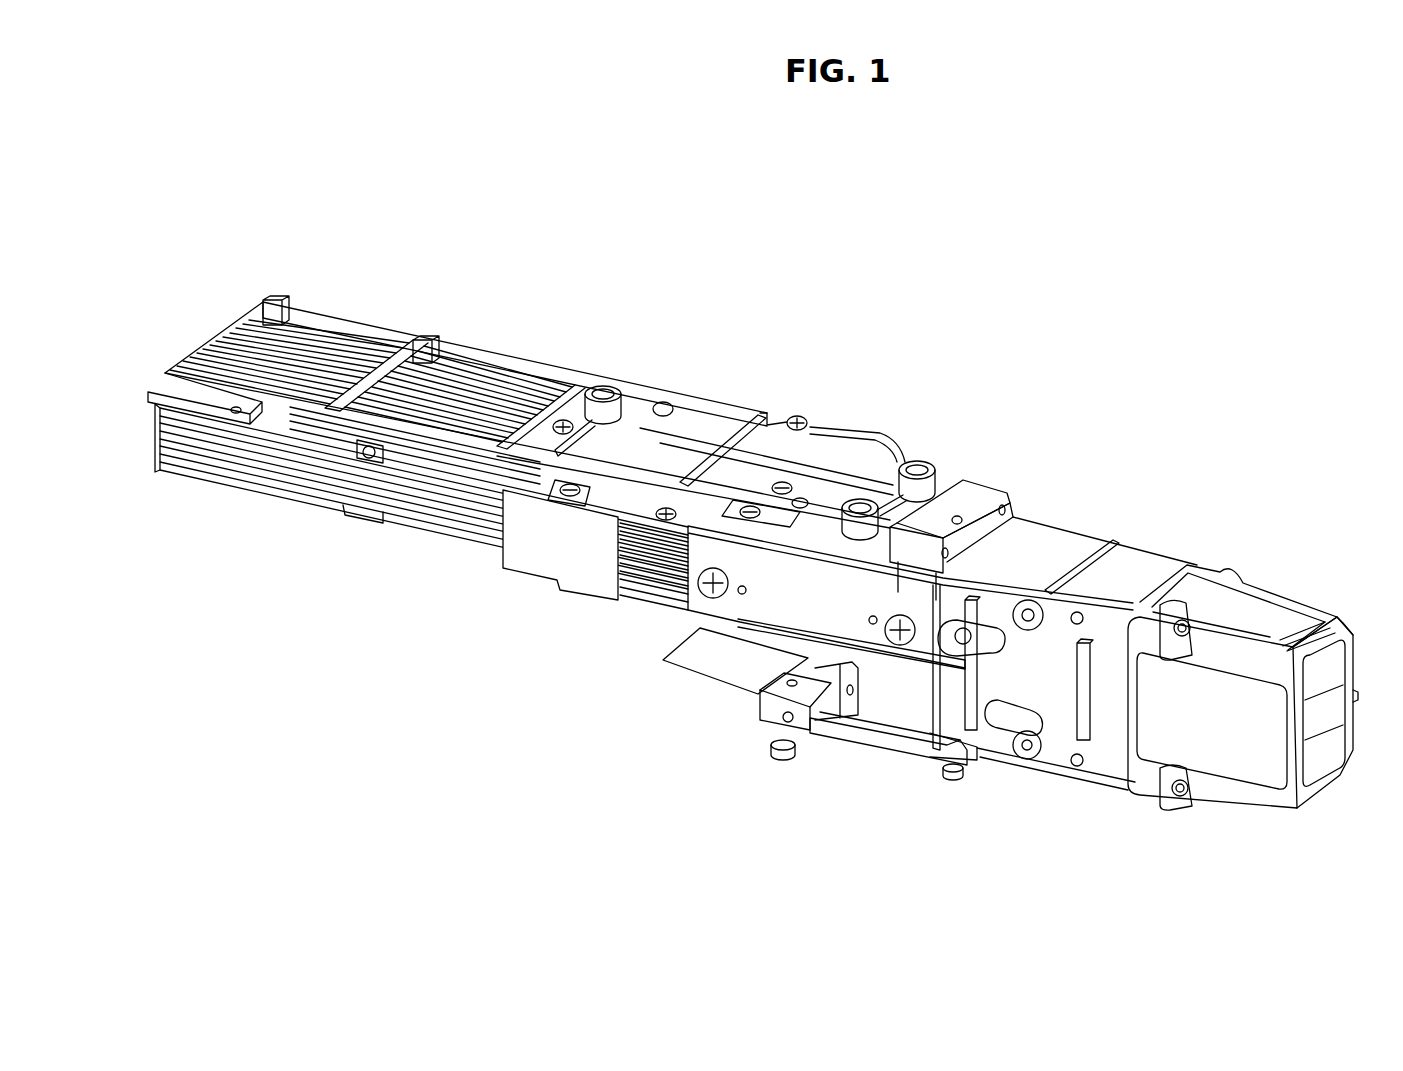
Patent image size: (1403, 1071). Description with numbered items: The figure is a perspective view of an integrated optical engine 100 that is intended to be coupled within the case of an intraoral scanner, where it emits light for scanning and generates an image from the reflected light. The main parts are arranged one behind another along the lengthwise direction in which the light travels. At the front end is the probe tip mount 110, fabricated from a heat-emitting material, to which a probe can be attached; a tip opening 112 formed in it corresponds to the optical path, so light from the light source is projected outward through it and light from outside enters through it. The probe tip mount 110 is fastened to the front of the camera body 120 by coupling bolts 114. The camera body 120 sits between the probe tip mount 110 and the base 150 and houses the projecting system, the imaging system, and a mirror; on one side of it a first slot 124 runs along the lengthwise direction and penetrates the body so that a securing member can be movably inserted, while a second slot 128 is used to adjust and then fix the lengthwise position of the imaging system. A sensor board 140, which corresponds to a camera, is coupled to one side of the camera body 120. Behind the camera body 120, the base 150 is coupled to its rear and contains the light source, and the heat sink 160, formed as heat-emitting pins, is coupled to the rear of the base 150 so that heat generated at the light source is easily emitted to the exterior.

The integrated optical engine 100 is at (1021, 324).
The probe tip mount 110 is at (1240, 812).
The tip opening 112 is at (1332, 688).
The coupling bolts 114 is at (1236, 570).
The camera body 120 is at (995, 767).
The first slot 124 is at (987, 623).
The second slot 128 is at (1008, 732).
The sensor board 140 is at (865, 752).
The base 150 is at (965, 463).
The heat sink 160 is at (456, 551).